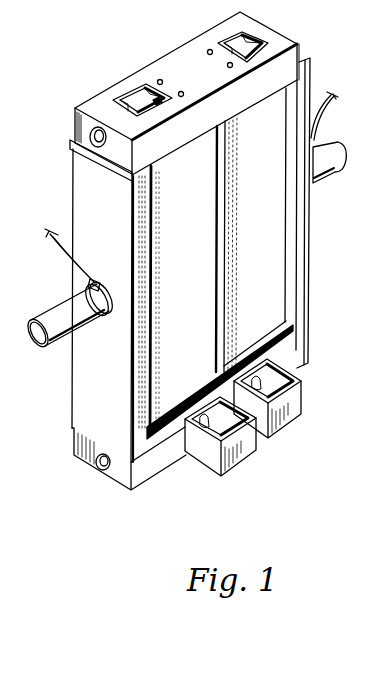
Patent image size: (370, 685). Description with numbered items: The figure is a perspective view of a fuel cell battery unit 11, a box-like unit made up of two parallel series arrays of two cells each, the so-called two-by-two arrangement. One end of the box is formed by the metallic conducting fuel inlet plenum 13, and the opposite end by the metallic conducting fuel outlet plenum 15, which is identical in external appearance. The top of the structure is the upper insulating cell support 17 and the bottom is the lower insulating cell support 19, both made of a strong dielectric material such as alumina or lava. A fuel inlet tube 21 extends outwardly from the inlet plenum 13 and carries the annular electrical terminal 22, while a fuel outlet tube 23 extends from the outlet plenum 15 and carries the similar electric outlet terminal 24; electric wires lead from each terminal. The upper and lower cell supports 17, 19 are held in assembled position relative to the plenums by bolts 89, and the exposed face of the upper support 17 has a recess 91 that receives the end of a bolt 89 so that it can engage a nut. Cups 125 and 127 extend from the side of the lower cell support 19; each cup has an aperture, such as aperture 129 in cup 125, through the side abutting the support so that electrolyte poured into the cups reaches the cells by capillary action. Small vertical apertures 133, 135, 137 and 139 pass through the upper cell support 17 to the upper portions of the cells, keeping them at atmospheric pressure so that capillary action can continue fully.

The fuel cell battery unit 11 is at (157, 38).
The fuel inlet plenum 13 is at (76, 129).
The fuel outlet plenum 15 is at (302, 92).
The upper insulating cell support 17 is at (165, 72).
The lower insulating cell support 19 is at (161, 455).
The fuel inlet tube 21 is at (68, 340).
The annular electrical terminal 22 is at (85, 300).
The fuel outlet tube 23 is at (329, 177).
The electric outlet terminal 24 is at (313, 188).
The bolt 89 is at (94, 145).
The recess 91 is at (130, 99).
The cup 125 is at (247, 455).
The cup 127 is at (299, 402).
The aperture 129 is at (214, 450).
The vertical aperture 133 is at (183, 94).
The vertical aperture 135 is at (232, 68).
The vertical aperture 137 is at (163, 82).
The vertical aperture 139 is at (208, 50).